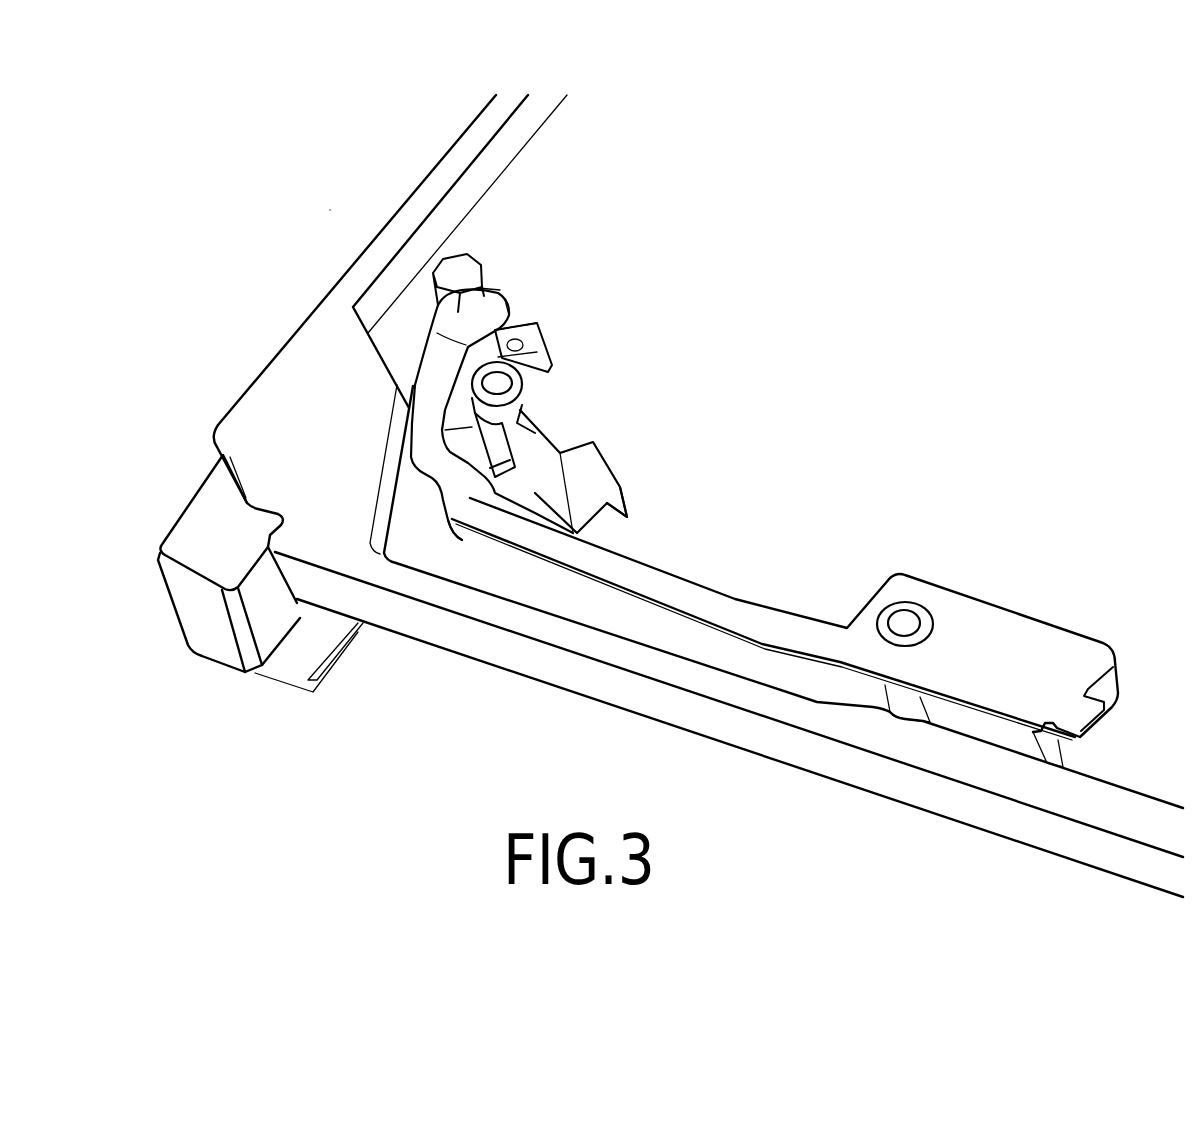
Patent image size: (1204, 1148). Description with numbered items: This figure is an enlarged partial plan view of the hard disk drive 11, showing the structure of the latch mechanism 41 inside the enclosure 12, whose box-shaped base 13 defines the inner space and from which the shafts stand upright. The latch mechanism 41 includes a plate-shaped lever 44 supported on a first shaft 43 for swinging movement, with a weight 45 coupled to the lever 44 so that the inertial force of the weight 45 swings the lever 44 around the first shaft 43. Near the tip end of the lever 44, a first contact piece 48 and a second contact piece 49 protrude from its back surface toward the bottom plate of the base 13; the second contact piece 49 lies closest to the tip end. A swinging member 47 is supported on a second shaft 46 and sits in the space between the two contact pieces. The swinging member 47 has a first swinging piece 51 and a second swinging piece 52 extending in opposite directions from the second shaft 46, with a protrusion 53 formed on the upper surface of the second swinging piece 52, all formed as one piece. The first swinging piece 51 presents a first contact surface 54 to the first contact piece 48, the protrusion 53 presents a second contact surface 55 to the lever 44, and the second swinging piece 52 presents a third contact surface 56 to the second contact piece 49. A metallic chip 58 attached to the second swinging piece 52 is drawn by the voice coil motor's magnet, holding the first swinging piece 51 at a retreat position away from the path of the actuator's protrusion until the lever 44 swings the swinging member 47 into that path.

The hard disk drive 11 is at (285, 158).
The enclosure 12 is at (262, 350).
The base 13 is at (217, 447).
The latch mechanism 41 is at (703, 363).
The first shaft 43 is at (910, 615).
The lever 44 is at (719, 580).
The weight 45 is at (1113, 688).
The second shaft 46 is at (507, 383).
The swinging member 47 is at (643, 481).
The first contact piece 48 is at (468, 520).
The second contact piece 49 is at (508, 315).
The first swinging piece 51 is at (627, 517).
The second swinging piece 52 is at (470, 263).
The protrusion 53 is at (447, 337).
The first contact surface 54 is at (487, 487).
The second contact surface 55 is at (516, 327).
The third contact surface 56 is at (485, 288).
The metallic chip 58 is at (538, 340).